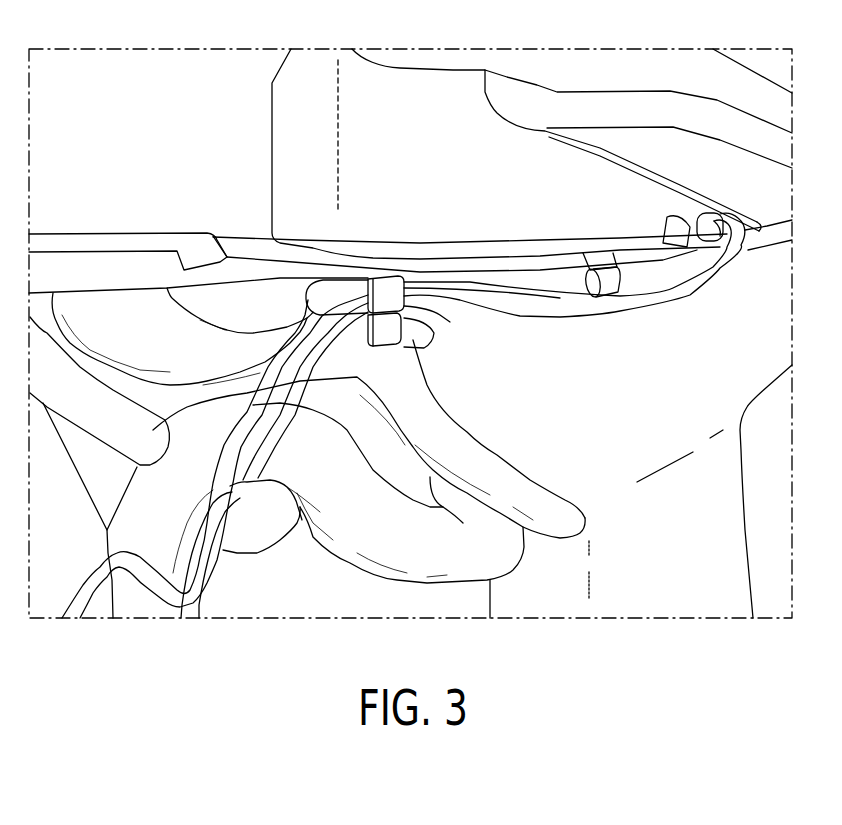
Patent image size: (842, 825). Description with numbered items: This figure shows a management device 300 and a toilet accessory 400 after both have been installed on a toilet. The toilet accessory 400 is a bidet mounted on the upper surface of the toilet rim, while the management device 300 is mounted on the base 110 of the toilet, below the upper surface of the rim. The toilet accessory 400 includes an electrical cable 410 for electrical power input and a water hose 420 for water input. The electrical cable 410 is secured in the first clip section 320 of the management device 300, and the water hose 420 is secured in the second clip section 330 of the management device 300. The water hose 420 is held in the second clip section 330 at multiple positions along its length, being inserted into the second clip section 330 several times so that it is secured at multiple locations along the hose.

The base 110 is at (645, 442).
The management device 300 is at (297, 348).
The first clip section 320 is at (397, 302).
The second clip section 330 is at (390, 343).
The toilet accessory 400 is at (433, 159).
The electrical cable 410 is at (682, 295).
The water hose 420 is at (513, 315).